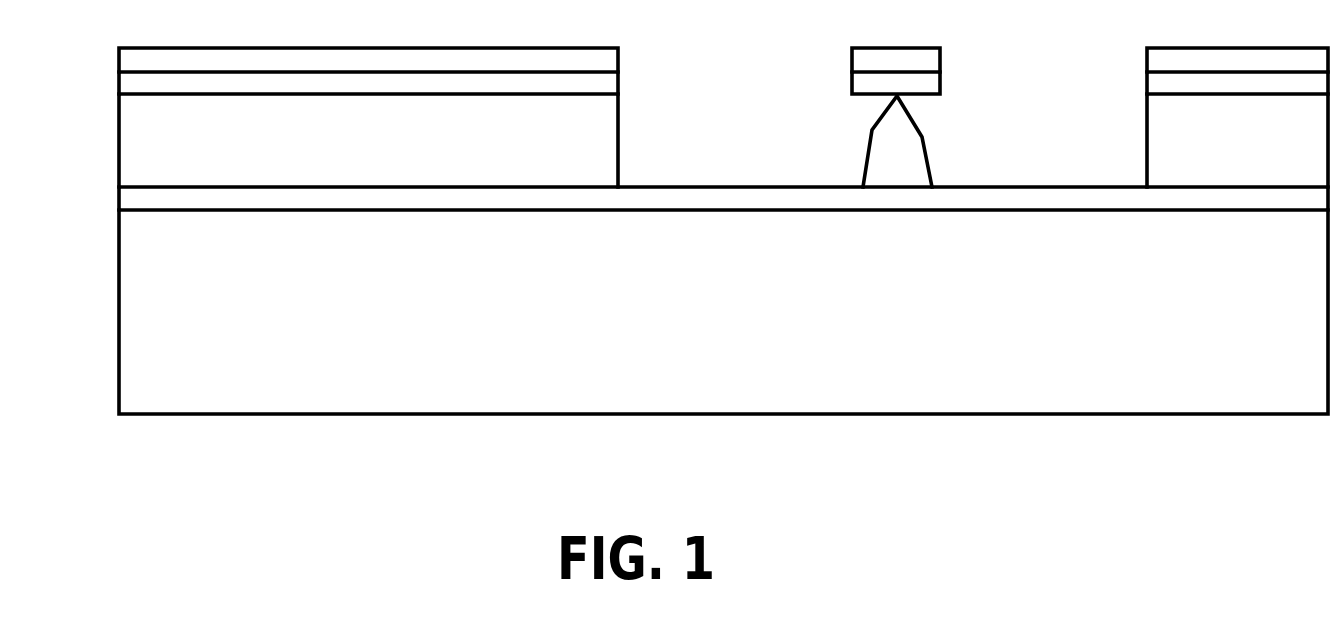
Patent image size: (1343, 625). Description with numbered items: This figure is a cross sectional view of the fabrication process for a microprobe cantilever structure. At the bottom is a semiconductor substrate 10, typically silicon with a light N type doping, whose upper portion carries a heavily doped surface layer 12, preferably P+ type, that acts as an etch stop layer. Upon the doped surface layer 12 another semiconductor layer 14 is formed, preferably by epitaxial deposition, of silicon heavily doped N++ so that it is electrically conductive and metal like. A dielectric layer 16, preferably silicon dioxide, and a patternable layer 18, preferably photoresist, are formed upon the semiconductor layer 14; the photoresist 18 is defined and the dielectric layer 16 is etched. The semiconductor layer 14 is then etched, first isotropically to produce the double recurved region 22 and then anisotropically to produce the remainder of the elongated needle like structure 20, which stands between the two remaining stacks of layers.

The semiconductor substrate 10 is at (119, 302).
The heavily doped surface layer 12 is at (119, 198).
The semiconductor layer 14 is at (119, 142).
The dielectric layer 16 is at (119, 82).
The patternable layer 18 is at (119, 62).
The elongated needle like structure 20 is at (925, 140).
The double recurved region 22 is at (866, 113).